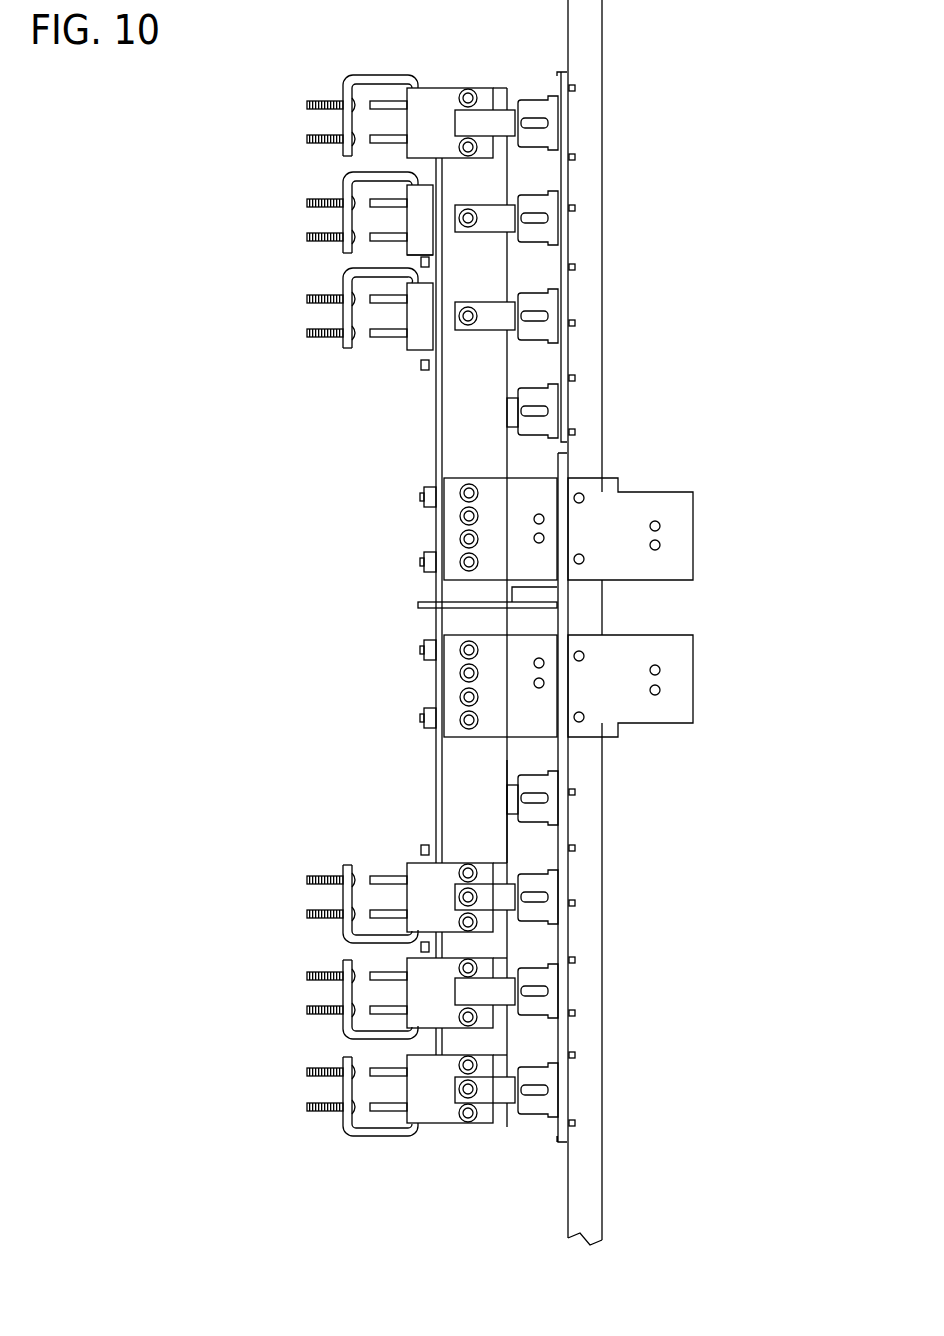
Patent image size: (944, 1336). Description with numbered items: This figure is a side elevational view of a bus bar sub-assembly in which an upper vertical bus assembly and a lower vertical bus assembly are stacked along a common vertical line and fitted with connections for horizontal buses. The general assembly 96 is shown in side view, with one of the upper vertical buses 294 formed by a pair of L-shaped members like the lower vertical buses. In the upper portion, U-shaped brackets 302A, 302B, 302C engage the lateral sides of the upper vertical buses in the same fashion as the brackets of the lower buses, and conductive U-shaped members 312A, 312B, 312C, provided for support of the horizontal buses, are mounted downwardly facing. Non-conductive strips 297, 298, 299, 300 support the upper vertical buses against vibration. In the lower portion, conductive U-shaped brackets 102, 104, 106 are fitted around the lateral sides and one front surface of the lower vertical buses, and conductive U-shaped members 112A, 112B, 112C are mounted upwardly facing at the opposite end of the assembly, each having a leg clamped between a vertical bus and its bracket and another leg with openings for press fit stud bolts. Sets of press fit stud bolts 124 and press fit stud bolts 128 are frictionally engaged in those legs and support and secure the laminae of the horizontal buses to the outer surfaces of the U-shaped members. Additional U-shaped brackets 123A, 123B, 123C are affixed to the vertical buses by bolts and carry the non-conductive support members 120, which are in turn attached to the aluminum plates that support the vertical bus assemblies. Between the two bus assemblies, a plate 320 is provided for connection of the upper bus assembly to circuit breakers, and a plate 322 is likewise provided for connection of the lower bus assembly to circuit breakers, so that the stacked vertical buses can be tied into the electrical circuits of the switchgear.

The switch assembly 96 is at (492, 797).
The U-shaped bracket 102 is at (443, 1123).
The U-shaped bracket 104 is at (427, 988).
The U-shaped bracket 106 is at (435, 905).
The U-shaped member 112A is at (345, 1118).
The U-shaped member 112B is at (345, 994).
The U-shaped member 112C is at (345, 865).
The non-conductive support member 120 is at (555, 232).
The U-shaped bracket 123A is at (497, 320).
The U-shaped bracket 123B is at (498, 1000).
The U-shaped bracket 123C is at (502, 128).
The press fit stud bolt 124 is at (375, 103).
The press fit stud bolt 128 is at (322, 100).
The upper vertical bus 294 is at (483, 388).
The non-conductive strip 297 is at (422, 565).
The non-conductive strip 298 is at (422, 490).
The non-conductive strip 299 is at (427, 378).
The non-conductive strip 300 is at (428, 258).
The U-shaped bracket 302A is at (417, 340).
The U-shaped bracket 302B is at (425, 210).
The U-shaped bracket 302C is at (437, 115).
The conductive U-shaped member 312A is at (345, 313).
The conductive U-shaped member 312B is at (345, 222).
The conductive U-shaped member 312C is at (345, 126).
The plate 320 is at (680, 528).
The plate 322 is at (680, 662).